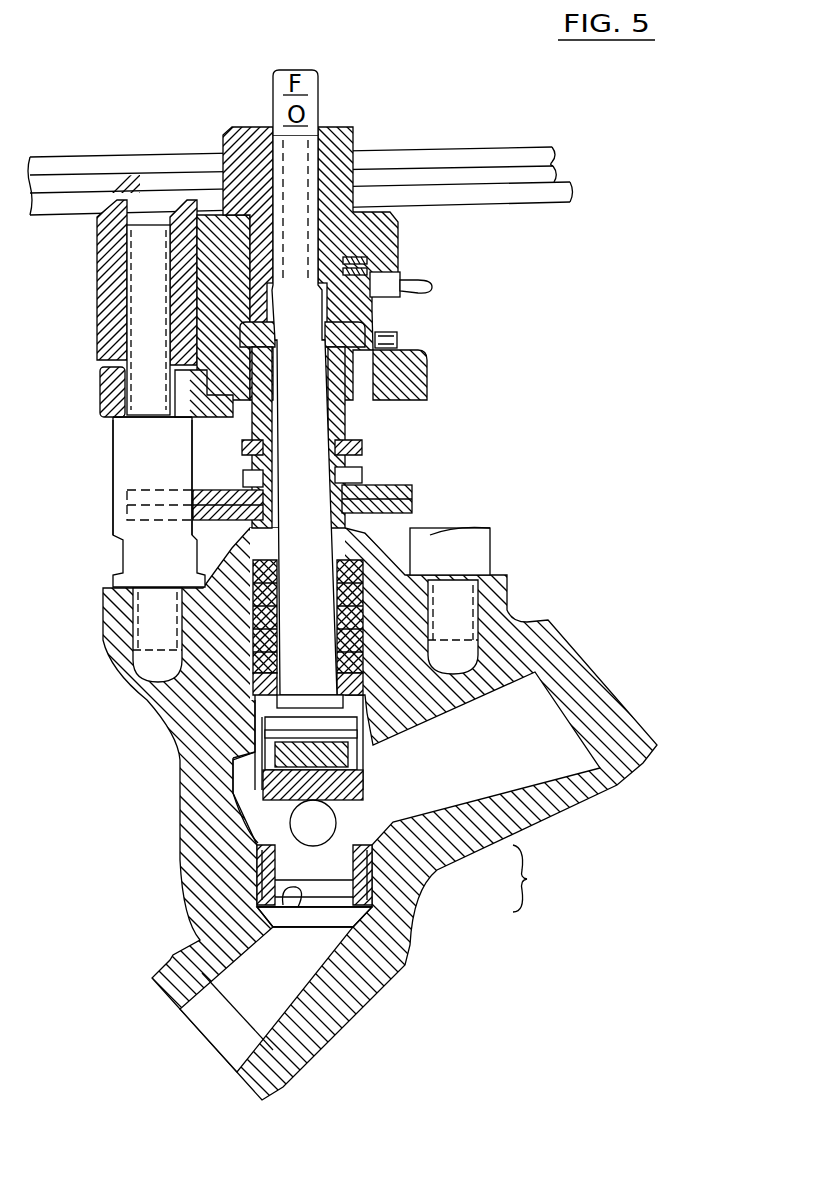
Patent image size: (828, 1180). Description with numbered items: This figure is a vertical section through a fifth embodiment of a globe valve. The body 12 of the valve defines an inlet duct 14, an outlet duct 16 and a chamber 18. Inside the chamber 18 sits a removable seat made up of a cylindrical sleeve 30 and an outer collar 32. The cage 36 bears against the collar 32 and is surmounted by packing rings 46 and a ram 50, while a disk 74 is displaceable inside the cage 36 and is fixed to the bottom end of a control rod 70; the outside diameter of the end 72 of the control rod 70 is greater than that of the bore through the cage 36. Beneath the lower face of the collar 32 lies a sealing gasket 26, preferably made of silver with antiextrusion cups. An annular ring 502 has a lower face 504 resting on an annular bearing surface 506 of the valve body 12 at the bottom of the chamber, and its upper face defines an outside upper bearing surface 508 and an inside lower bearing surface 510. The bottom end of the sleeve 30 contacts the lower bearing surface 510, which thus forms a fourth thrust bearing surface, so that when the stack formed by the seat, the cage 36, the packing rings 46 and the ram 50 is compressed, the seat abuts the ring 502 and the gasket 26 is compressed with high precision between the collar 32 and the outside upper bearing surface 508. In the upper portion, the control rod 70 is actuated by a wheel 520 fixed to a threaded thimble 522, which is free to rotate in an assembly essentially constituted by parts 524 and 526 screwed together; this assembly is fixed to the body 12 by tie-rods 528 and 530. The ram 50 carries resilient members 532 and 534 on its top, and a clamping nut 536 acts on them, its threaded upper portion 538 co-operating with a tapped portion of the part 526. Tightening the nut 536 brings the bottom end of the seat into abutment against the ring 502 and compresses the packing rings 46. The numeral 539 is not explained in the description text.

The body 12 is at (602, 787).
The inlet duct 14 is at (253, 980).
The outlet duct 16 is at (587, 675).
The chamber 18 is at (243, 817).
The sealing gasket 26 is at (262, 862).
The cylindrical sleeve 30 is at (372, 875).
The outer collar 32 is at (372, 852).
The cage 36 is at (247, 773).
The packing rings 46 is at (350, 593).
The ram 50 is at (187, 530).
The control rod 70 is at (316, 462).
The end of the control rod 72 is at (277, 747).
The disk 74 is at (280, 785).
The annular ring 502 is at (267, 908).
The lower face 504 is at (250, 933).
The annular bearing surface 506 is at (418, 913).
The outside upper bearing surface 508 is at (273, 897).
The inside lower bearing surface 510 is at (277, 887).
The wheel 520 is at (458, 156).
The threaded thimble 522 is at (332, 238).
The part 524 is at (412, 372).
The part 526 is at (387, 350).
The tie-rod 528 is at (122, 472).
The tie-rod 530 is at (473, 557).
The resilient member 532 is at (412, 507).
The resilient member 534 is at (392, 482).
The clamping nut 536 is at (350, 440).
The upper portion of the nut 538 is at (213, 417).
The nut 539 is at (100, 375).